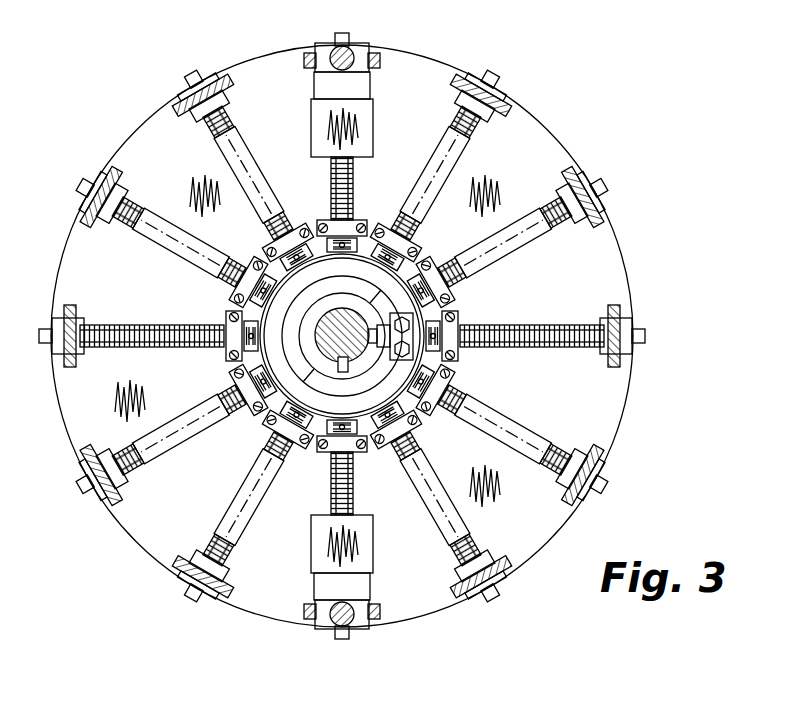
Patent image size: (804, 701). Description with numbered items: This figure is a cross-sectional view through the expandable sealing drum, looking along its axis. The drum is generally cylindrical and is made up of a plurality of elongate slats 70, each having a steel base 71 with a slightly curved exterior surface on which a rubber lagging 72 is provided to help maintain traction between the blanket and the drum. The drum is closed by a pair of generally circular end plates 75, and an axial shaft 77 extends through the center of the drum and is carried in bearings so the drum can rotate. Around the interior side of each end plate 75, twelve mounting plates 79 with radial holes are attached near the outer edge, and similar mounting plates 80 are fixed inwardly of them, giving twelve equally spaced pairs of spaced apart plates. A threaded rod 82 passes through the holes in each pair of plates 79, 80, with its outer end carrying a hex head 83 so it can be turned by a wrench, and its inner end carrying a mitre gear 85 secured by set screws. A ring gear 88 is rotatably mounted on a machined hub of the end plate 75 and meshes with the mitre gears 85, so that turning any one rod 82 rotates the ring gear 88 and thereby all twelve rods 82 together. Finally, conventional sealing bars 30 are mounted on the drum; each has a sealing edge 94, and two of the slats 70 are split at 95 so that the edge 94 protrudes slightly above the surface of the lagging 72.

The sealing bar 30 is at (327, 594).
The slat 70 is at (243, 77).
The steel base 71 is at (128, 180).
The rubber lagging 72 is at (177, 123).
The end plate 75 is at (545, 145).
The axial shaft 77 is at (342, 340).
The mounting plate 79 is at (192, 84).
The mounting plate 80 is at (257, 253).
The threaded rod 82 is at (477, 327).
The hex head 83 is at (340, 30).
The mitre gear 85 is at (308, 291).
The ring gear 88 is at (323, 442).
The sealing edge 94 is at (353, 34).
The split 95 is at (360, 77).